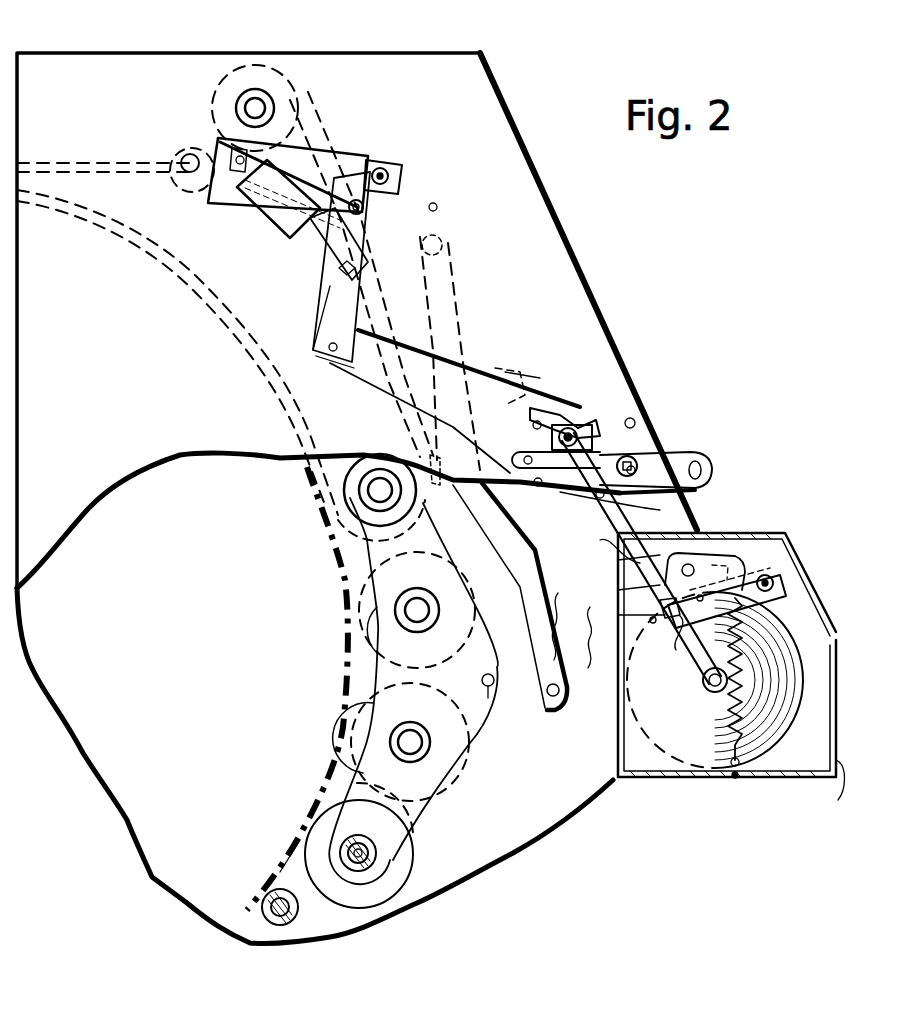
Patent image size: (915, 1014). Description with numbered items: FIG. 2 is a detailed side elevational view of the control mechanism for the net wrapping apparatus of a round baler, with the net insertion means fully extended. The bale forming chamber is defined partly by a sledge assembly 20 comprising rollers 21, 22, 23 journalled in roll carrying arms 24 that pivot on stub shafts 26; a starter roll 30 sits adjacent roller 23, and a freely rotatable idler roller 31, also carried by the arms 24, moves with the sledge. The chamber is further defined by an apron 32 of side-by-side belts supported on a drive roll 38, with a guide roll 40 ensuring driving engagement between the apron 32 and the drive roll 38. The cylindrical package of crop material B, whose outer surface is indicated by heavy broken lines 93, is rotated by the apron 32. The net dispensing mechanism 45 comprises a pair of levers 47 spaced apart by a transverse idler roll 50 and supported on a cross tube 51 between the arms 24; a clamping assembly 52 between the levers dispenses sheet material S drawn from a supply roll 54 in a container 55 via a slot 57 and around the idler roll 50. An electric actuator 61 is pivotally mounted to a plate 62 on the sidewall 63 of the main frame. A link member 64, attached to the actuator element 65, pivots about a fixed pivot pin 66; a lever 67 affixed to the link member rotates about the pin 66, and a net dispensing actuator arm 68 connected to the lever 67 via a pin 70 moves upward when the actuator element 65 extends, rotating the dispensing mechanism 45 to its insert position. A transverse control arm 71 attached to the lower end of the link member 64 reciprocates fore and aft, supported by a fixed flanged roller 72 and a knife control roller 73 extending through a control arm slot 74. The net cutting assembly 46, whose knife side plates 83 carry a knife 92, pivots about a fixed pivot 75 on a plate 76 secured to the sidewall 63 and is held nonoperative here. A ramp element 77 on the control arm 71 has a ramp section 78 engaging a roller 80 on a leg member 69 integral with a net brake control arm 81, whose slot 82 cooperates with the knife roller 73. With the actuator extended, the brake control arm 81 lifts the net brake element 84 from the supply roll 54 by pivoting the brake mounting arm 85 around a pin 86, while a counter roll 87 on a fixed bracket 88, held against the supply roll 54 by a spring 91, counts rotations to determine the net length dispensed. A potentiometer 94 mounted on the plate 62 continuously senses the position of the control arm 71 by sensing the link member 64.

The sledge assembly 20 is at (478, 783).
The roller 21 is at (362, 652).
The roller 22 is at (357, 730).
The roller 23 is at (412, 868).
The roll carrying arms 24 is at (405, 863).
The stub shafts 26 is at (365, 875).
The starter roll 30 is at (293, 924).
The idler roller 31 is at (347, 483).
The apron 32 is at (165, 263).
The drive roll 38 is at (253, 88).
The guide roll 40 is at (184, 158).
The net dispensing mechanism 45 is at (550, 544).
The net cutting assembly 46 is at (512, 373).
The levers 47 is at (520, 702).
The idler roll 50 is at (556, 612).
The cross tube 51 is at (492, 710).
The clamping assembly 52 is at (372, 542).
The supply roll 54 is at (796, 624).
The container 55 is at (836, 762).
The slot 57 is at (618, 556).
The electric actuator 61 is at (285, 220).
The plate 62 is at (348, 160).
The sidewall 63 is at (505, 118).
The link member 64 is at (367, 257).
The actuator element 65 is at (315, 262).
The fixed pivot pin 66 is at (364, 203).
The lever 67 is at (437, 205).
The net dispensing actuator arm 68 is at (452, 278).
The leg member 69 is at (625, 437).
The pin 70 is at (442, 240).
The control arm 71 is at (420, 380).
The fixed flanged roller 72 is at (698, 460).
The knife control roller 73 is at (638, 463).
The control arm slot 74 is at (700, 478).
The fixed pivot 75 is at (560, 490).
The plate 76 is at (634, 418).
The ramp element 77 is at (572, 408).
The ramp section 78 is at (588, 424).
The roller 80 is at (600, 412).
The net brake control arm 81 is at (605, 556).
The slot 82 is at (605, 495).
The knife side plate 83 is at (503, 367).
The net brake element 84 is at (778, 598).
The brake mounting arm 85 is at (770, 575).
The pin 86 is at (690, 652).
The counter roll 87 is at (735, 562).
The fixed bracket 88 is at (706, 732).
The spring 91 is at (742, 745).
The knife 92 is at (438, 462).
The heavy broken lines 93 is at (283, 855).
The potentiometer 94 is at (393, 165).
The sheet material S is at (605, 652).
The cylindrical package of compacted crop material B is at (112, 630).